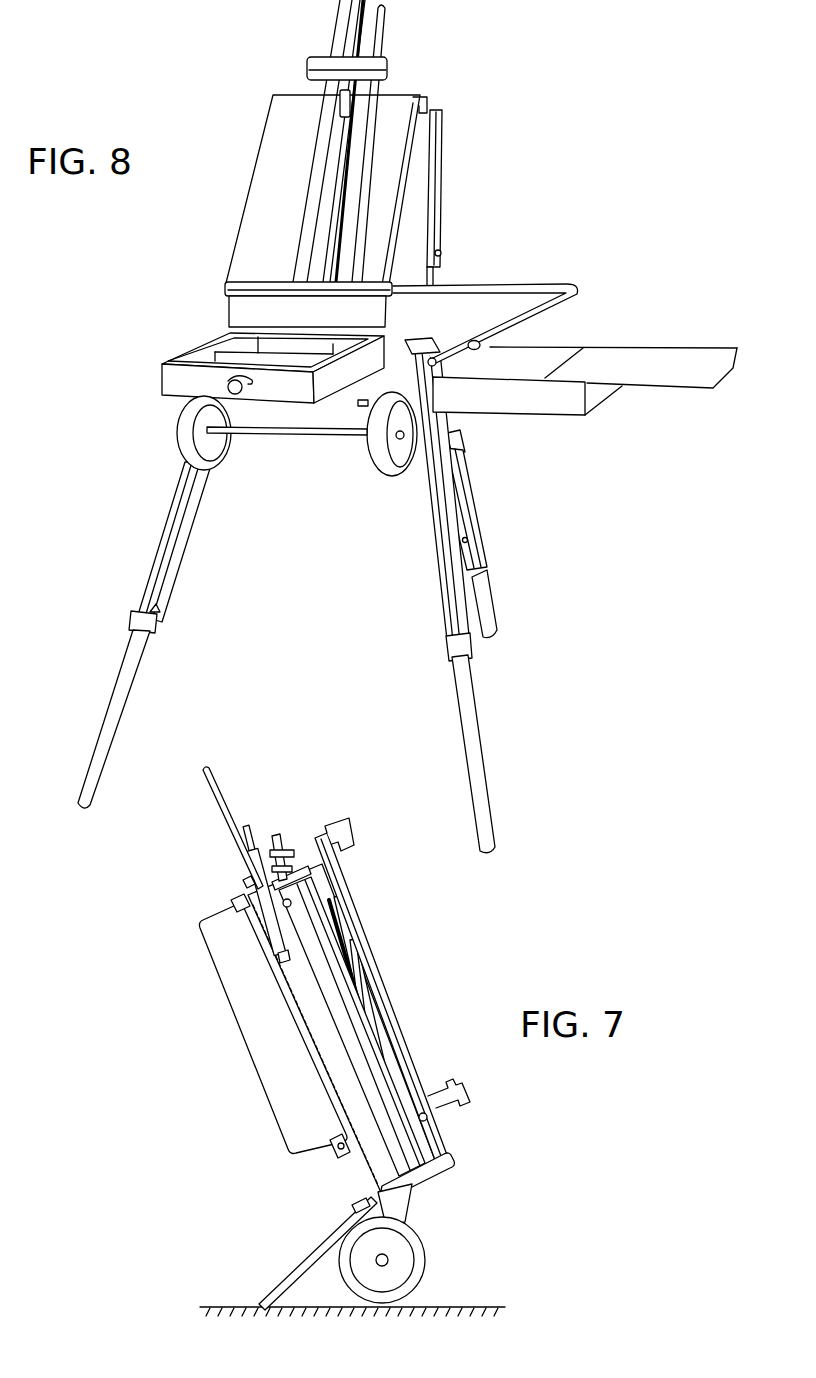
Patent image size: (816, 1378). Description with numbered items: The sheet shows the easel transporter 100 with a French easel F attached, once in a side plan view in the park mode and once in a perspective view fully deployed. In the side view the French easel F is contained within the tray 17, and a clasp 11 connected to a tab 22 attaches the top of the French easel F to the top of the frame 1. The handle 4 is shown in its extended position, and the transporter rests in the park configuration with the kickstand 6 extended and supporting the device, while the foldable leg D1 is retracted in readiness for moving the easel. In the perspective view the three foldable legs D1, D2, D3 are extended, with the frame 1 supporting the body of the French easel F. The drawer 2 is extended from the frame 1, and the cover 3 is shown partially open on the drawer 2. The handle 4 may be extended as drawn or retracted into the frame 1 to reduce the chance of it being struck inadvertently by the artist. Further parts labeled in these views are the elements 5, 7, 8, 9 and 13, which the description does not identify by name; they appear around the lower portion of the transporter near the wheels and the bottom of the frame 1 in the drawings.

In FIG. 8, the easel transporter 100 is at (556, 254).
In FIG. 7, the easel transporter 100 is at (231, 1063).
In FIG. 8, the frame 1 is at (443, 357).
In FIG. 7, the frame 1 is at (363, 1165).
In FIG. 8, the drawer 2 is at (556, 414).
In FIG. 7, the drawer 2 is at (268, 1103).
In FIG. 8, the cover 3 is at (683, 348).
In FIG. 8, the handle 4 is at (517, 286).
In FIG. 7, the handle 4 is at (223, 803).
In FIG. 8, the wheel 5 is at (221, 468).
In FIG. 7, the wheel 5 is at (430, 1262).
In FIG. 7, the kickstand 6 is at (305, 1262).
In FIG. 8, the axle 7 is at (291, 437).
In FIG. 7, the wheel bracket 8 is at (410, 1207).
In FIG. 7, the pivot pin 9 is at (337, 1148).
In FIG. 7, the clasp 11 is at (247, 883).
In FIG. 7, the clamp 13 is at (238, 903).
In FIG. 7, the tray 17 is at (420, 1195).
In FIG. 7, the tab 22 is at (278, 881).
In FIG. 8, the foldable leg D1 is at (442, 605).
In FIG. 7, the foldable leg D1 is at (288, 903).
In FIG. 8, the foldable leg D2 is at (480, 527).
In FIG. 8, the foldable leg D3 is at (161, 620).
In FIG. 8, the French easel F is at (413, 97).
In FIG. 7, the French easel F is at (443, 1138).